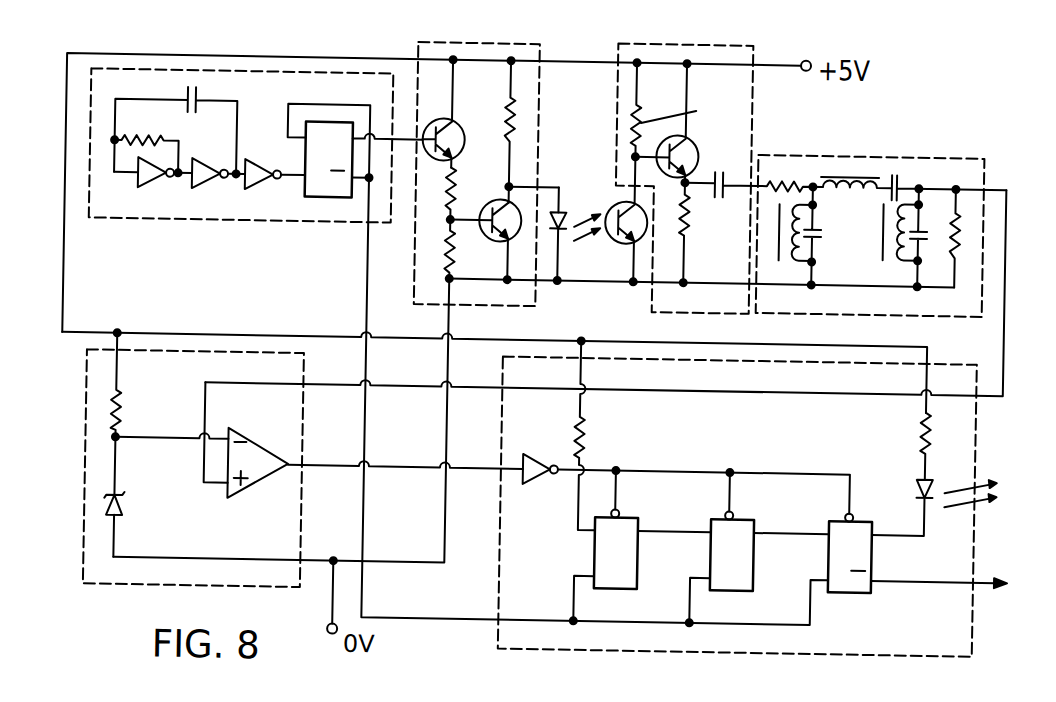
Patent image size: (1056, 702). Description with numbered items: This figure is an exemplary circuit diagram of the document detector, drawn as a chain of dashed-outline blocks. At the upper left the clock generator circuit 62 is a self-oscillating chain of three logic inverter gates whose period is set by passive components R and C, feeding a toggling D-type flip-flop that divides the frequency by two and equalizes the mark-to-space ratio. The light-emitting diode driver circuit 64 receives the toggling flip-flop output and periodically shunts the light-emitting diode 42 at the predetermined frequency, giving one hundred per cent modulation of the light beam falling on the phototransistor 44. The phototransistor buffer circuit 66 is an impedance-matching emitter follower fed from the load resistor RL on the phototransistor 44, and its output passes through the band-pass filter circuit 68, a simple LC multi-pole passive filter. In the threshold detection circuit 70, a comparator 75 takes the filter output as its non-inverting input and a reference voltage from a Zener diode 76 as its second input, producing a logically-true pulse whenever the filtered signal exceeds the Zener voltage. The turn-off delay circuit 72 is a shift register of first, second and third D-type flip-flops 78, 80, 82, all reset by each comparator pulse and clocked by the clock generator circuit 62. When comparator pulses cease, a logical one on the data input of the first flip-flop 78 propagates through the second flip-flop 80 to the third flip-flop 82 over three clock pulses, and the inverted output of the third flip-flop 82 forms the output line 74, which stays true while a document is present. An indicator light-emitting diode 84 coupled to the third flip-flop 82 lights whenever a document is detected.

The light-emitting diode 42 is at (562, 232).
The phototransistor 44 is at (611, 206).
The clock generator circuit 62 is at (266, 225).
The light-emitting diode driver circuit 64 is at (413, 275).
The phototransistor buffer circuit 66 is at (751, 114).
The band-pass filter circuit 68 is at (831, 152).
The threshold detection circuit 70 is at (193, 474).
The turn-off delay circuit 72 is at (748, 496).
The output line 74 is at (980, 578).
The comparator 75 is at (263, 459).
The Zener diode 76 is at (128, 513).
The first flip-flop 78 is at (644, 578).
The second flip-flop 80 is at (761, 581).
The third flip-flop 82 is at (880, 584).
The indicator light-emitting diode 84 is at (918, 484).